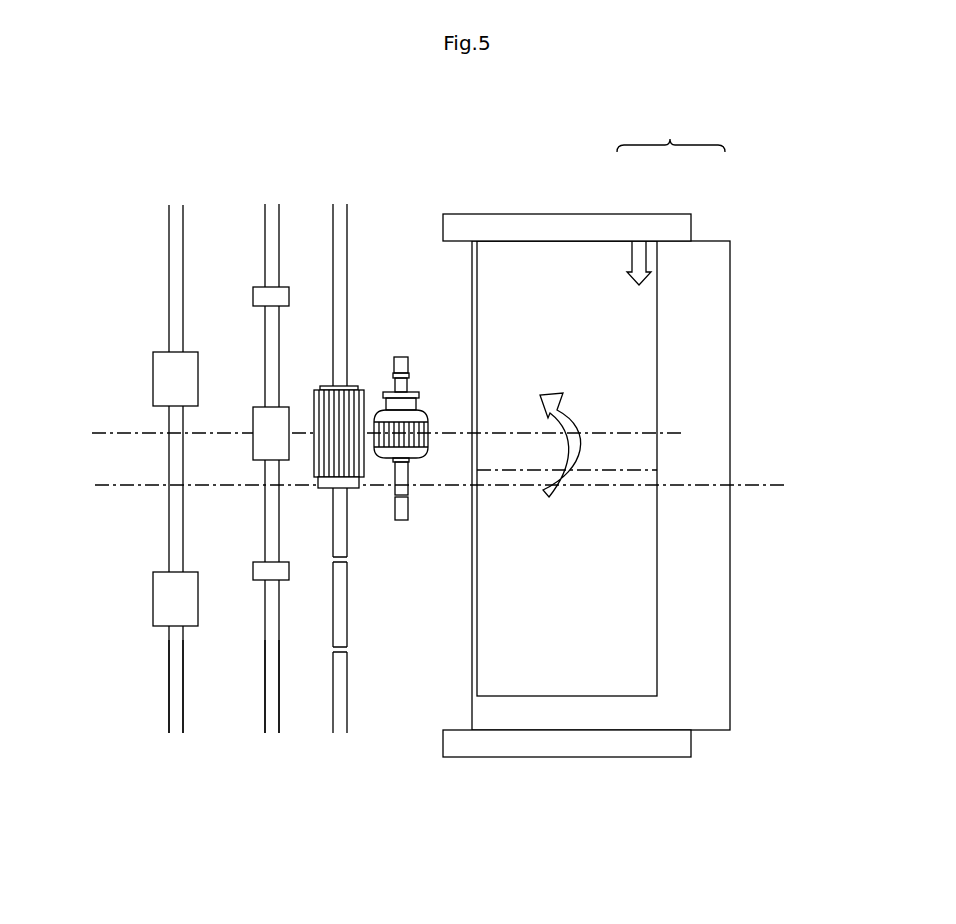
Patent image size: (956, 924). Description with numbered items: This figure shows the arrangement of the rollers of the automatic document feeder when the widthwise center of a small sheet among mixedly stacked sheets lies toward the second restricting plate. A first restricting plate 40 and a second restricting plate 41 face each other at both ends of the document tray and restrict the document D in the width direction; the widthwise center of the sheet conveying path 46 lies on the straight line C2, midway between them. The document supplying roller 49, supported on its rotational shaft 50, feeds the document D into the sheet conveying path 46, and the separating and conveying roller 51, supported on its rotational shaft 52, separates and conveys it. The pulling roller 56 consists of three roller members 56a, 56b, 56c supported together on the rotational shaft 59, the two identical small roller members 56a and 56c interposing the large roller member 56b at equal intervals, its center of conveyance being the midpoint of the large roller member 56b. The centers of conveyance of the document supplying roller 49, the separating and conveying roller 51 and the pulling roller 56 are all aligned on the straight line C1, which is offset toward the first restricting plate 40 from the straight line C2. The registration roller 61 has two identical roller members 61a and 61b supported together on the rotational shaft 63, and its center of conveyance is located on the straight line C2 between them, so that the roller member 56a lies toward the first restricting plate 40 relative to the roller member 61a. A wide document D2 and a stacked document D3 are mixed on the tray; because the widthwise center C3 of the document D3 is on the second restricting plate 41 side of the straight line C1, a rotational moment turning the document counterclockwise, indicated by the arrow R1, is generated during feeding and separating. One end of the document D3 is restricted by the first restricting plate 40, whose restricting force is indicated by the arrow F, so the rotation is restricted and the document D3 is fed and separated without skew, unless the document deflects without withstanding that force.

The first restricting plate 40 is at (538, 215).
The second restricting plate 41 is at (483, 752).
The sheet conveying path 46 is at (118, 568).
The document supplying roller 49 is at (420, 398).
The rotational shaft 50 is at (403, 520).
The separating and conveying roller 51 is at (366, 387).
The rotational shaft 52 is at (347, 700).
The pulling roller 56 is at (294, 248).
The roller member 56a is at (258, 580).
The roller member 56b is at (258, 407).
The roller member 56c is at (256, 287).
The rotational shaft 59 is at (279, 700).
The registration roller 61 is at (147, 270).
The roller member 61a is at (158, 626).
The roller member 61b is at (158, 352).
The rotational shaft 63 is at (183, 700).
The straight line C1 is at (113, 433).
The straight line C2 is at (114, 487).
The widthwise center C3 is at (636, 470).
The document D is at (671, 131).
The document D2 is at (711, 255).
The document D3 is at (612, 252).
The restricting force F is at (629, 279).
The arrow R1 is at (572, 412).